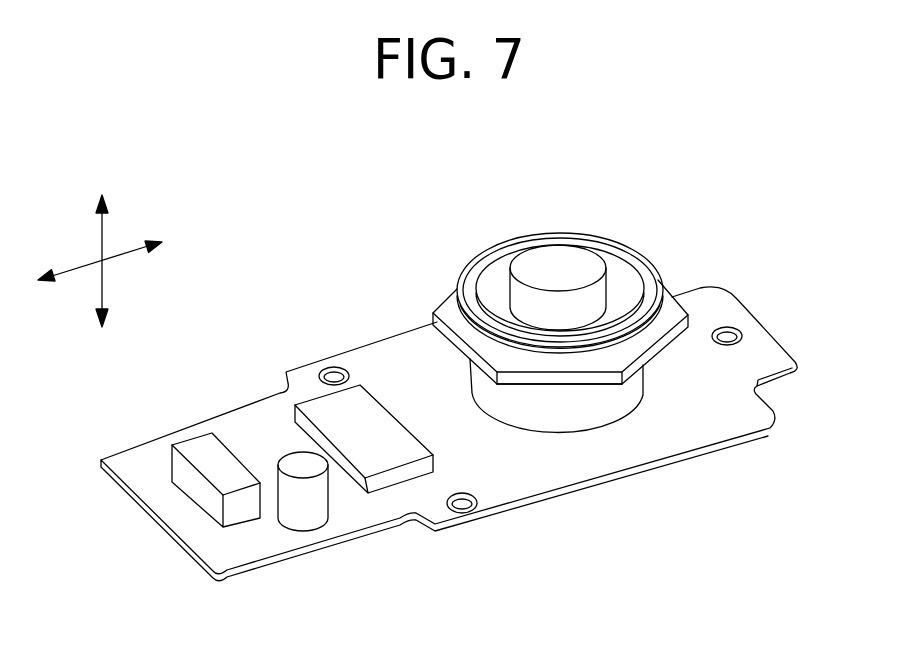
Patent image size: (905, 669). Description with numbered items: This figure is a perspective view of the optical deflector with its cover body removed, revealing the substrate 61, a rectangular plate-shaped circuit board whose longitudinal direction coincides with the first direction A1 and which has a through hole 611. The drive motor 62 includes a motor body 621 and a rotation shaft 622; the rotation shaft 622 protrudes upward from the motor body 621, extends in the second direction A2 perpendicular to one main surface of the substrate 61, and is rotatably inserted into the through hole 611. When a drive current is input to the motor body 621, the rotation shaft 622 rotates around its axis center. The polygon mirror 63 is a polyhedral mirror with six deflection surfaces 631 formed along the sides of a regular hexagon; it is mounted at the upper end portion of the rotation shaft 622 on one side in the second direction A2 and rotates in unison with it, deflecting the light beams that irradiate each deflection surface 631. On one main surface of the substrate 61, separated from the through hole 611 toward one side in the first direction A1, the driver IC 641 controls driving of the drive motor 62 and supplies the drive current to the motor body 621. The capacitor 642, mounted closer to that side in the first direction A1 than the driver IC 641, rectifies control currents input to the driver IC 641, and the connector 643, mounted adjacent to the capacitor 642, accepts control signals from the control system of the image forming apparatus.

The substrate 61 is at (753, 348).
The through hole 611 is at (627, 421).
The drive motor 62 is at (640, 248).
The motor body 621 is at (630, 397).
The rotation shaft 622 is at (562, 257).
The polygon mirror 63 is at (507, 362).
The deflection surface 631 is at (589, 378).
The driver IC 641 is at (325, 410).
The capacitor 642 is at (303, 517).
The connector 643 is at (198, 485).
The first direction A1 is at (118, 255).
The second direction A2 is at (105, 230).